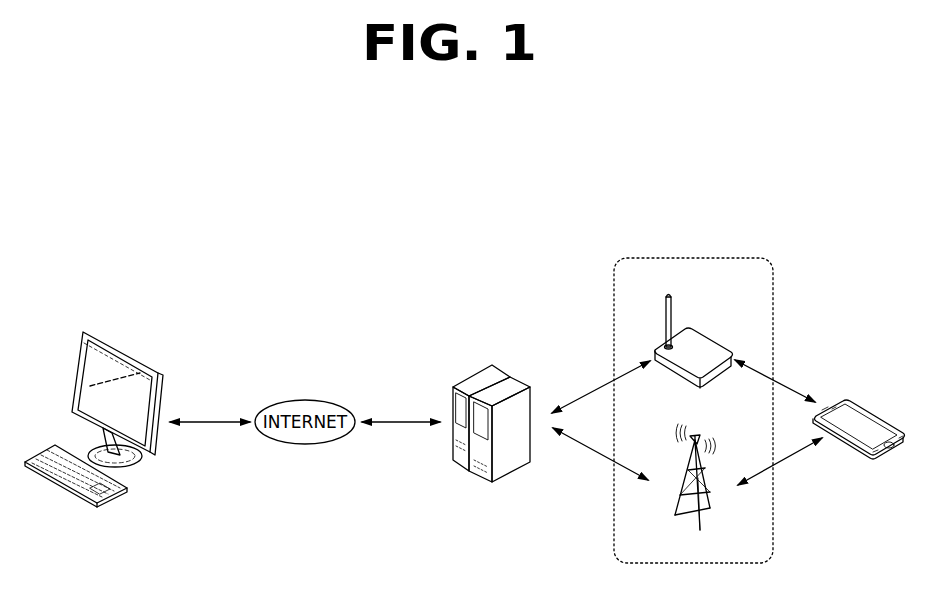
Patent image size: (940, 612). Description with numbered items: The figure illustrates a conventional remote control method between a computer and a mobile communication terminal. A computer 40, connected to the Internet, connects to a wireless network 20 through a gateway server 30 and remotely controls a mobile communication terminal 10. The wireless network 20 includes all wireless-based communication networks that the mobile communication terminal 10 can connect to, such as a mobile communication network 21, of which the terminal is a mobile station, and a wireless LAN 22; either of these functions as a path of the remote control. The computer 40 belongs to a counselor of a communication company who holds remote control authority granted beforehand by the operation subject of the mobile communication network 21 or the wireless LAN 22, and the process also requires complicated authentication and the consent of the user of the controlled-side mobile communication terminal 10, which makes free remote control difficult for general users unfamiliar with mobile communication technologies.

The mobile communication terminal 10 is at (865, 420).
The wireless network 20 is at (705, 257).
The mobile communication network 21 is at (685, 475).
The wireless LAN 22 is at (697, 340).
The gateway server 30 is at (480, 378).
The computer 40 is at (125, 352).